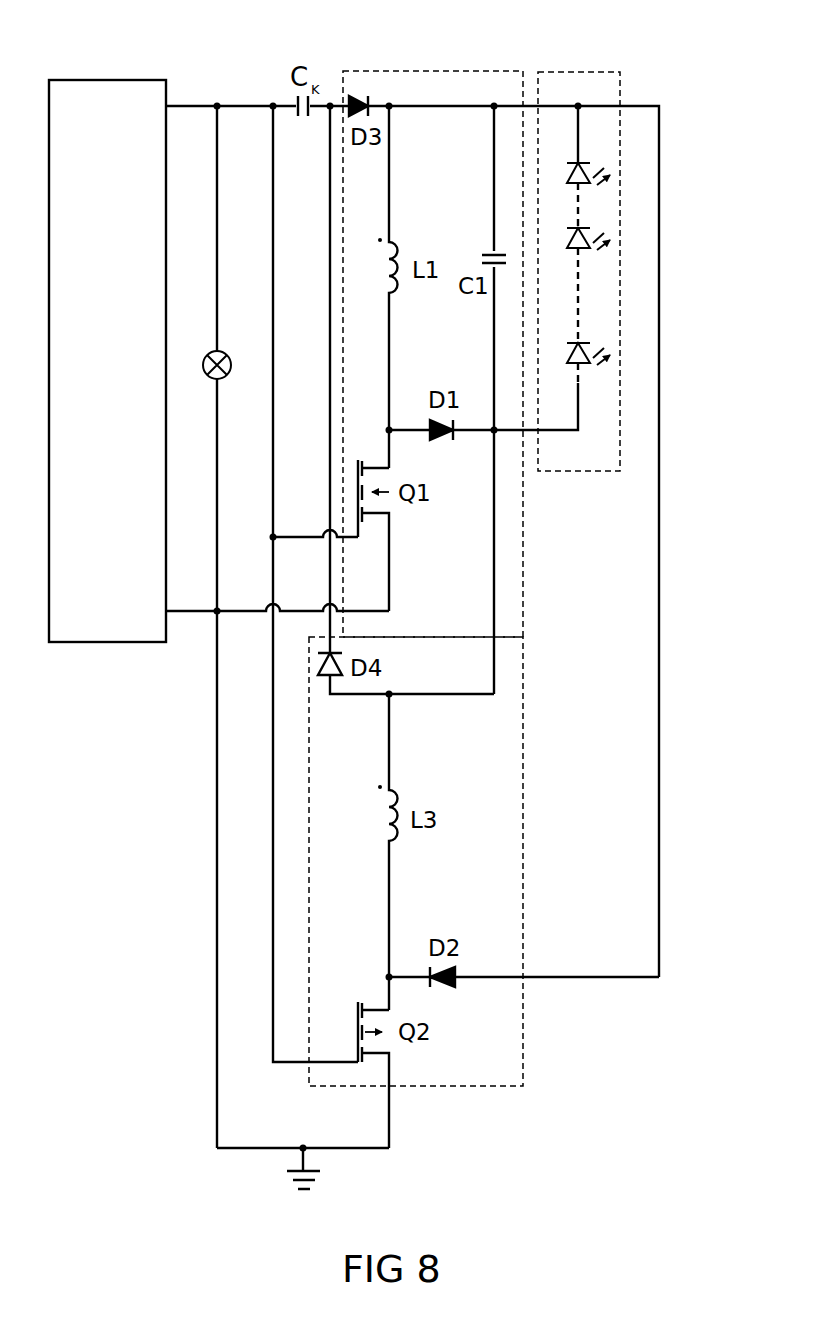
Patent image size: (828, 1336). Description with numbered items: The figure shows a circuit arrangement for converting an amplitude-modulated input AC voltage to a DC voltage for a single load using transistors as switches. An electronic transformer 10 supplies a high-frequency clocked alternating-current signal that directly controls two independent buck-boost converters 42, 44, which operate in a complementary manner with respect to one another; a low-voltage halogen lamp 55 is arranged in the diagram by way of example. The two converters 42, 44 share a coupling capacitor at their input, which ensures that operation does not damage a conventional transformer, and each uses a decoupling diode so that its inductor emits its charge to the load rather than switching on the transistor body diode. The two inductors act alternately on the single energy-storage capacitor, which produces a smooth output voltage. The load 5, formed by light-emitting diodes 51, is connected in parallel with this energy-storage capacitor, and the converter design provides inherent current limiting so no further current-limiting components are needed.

The electronic transformer 10 is at (121, 318).
The low-voltage halogen lamp 55 is at (231, 356).
The buck-boost converter 42 is at (438, 71).
The buck-boost converter 44 is at (452, 1086).
The load 5 is at (620, 93).
The light-emitting diodes 51 is at (588, 160).